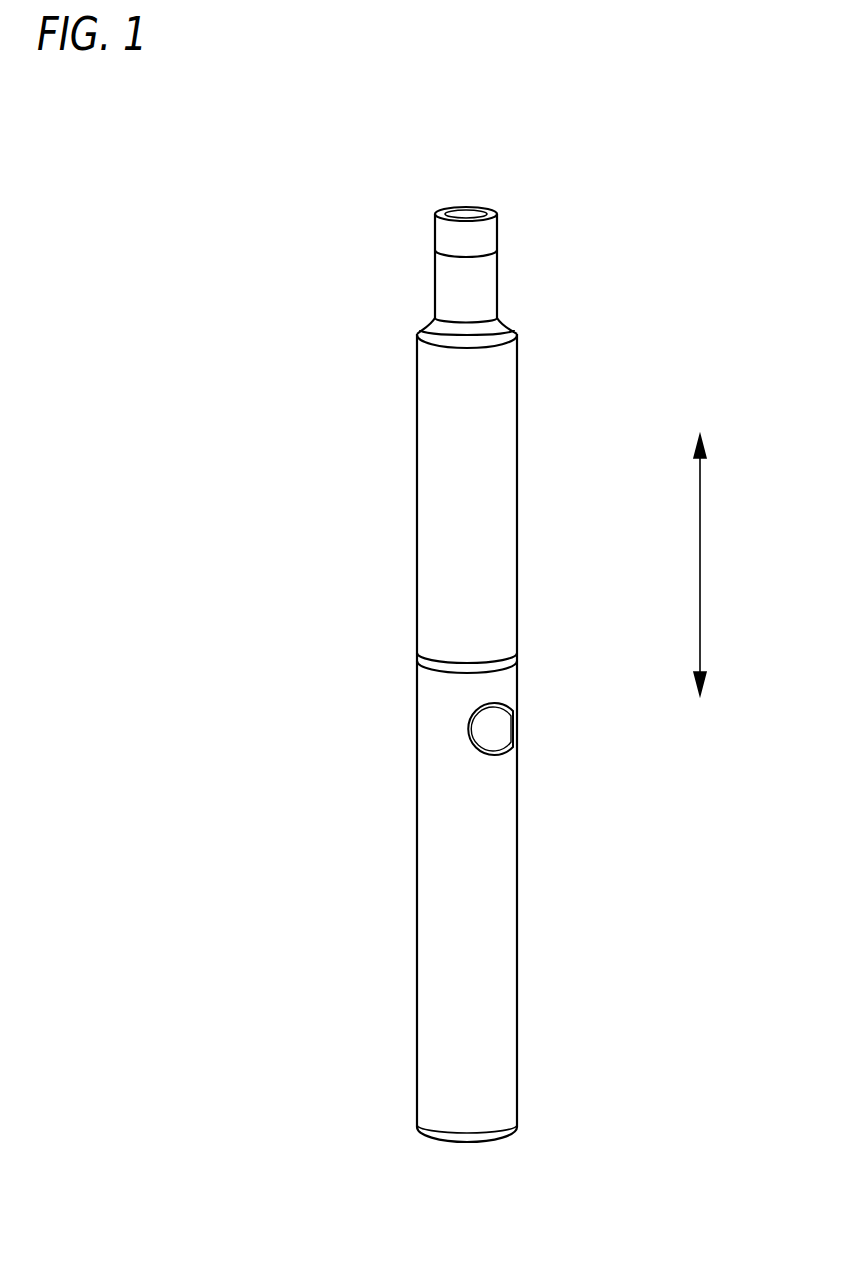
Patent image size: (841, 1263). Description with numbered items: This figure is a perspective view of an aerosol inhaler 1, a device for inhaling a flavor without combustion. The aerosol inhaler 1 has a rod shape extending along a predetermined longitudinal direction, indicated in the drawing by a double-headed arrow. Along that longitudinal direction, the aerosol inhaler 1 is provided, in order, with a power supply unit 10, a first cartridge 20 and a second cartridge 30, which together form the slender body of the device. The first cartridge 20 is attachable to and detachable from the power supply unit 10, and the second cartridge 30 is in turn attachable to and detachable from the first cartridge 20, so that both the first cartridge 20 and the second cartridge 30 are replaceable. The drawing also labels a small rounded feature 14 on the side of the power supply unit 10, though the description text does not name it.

The aerosol inhaler 1 is at (642, 160).
The power supply unit 10 is at (495, 948).
The push button 14 is at (497, 728).
The first cartridge 20 is at (443, 556).
The second cartridge 30 is at (497, 233).